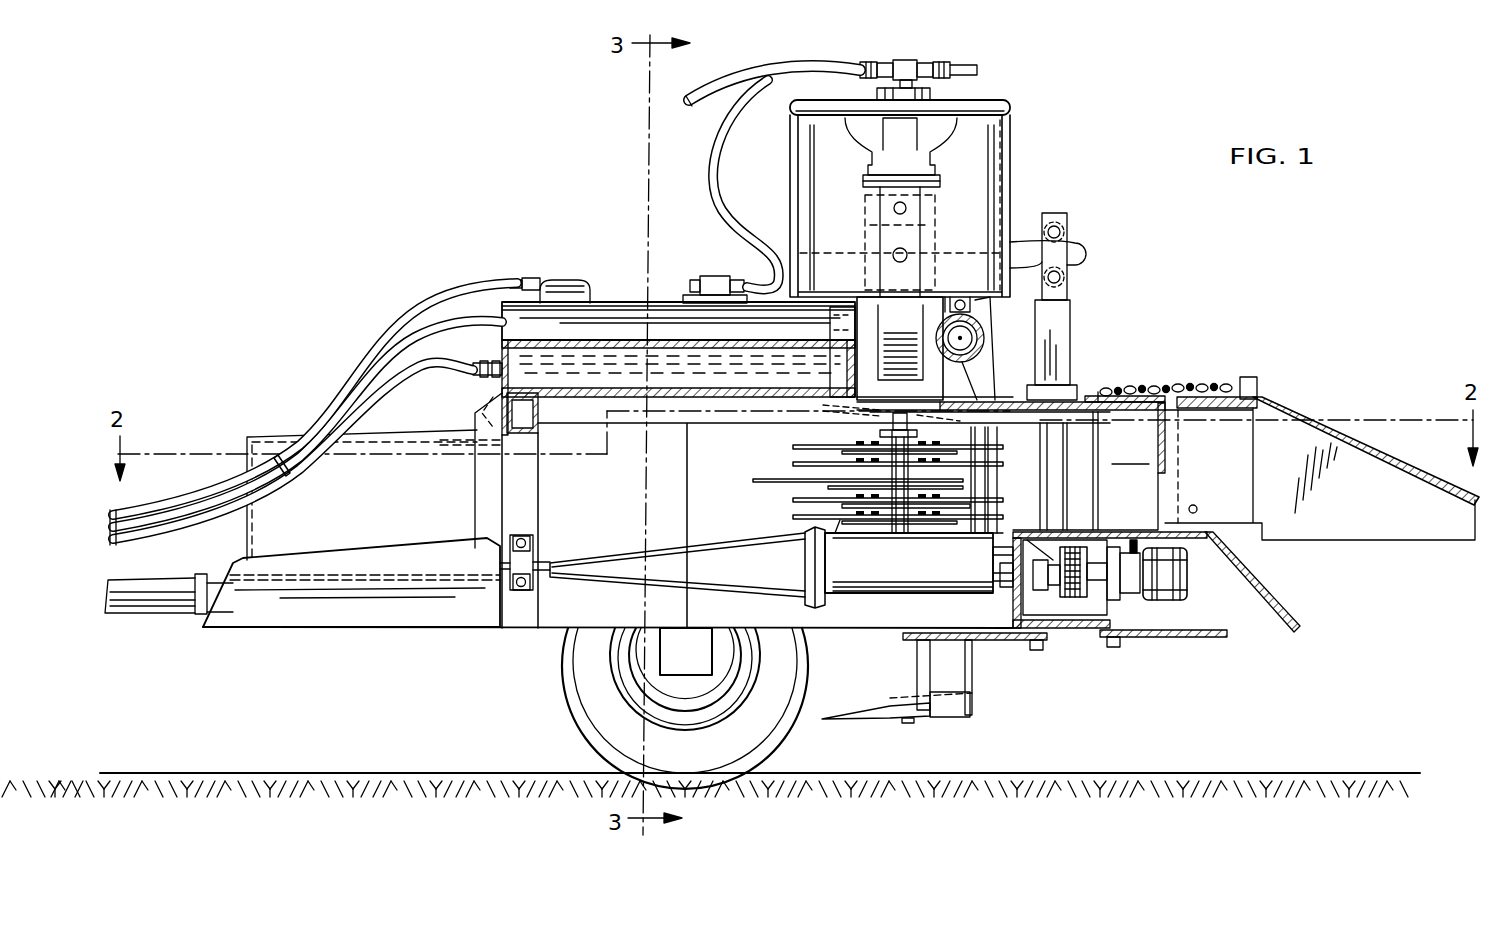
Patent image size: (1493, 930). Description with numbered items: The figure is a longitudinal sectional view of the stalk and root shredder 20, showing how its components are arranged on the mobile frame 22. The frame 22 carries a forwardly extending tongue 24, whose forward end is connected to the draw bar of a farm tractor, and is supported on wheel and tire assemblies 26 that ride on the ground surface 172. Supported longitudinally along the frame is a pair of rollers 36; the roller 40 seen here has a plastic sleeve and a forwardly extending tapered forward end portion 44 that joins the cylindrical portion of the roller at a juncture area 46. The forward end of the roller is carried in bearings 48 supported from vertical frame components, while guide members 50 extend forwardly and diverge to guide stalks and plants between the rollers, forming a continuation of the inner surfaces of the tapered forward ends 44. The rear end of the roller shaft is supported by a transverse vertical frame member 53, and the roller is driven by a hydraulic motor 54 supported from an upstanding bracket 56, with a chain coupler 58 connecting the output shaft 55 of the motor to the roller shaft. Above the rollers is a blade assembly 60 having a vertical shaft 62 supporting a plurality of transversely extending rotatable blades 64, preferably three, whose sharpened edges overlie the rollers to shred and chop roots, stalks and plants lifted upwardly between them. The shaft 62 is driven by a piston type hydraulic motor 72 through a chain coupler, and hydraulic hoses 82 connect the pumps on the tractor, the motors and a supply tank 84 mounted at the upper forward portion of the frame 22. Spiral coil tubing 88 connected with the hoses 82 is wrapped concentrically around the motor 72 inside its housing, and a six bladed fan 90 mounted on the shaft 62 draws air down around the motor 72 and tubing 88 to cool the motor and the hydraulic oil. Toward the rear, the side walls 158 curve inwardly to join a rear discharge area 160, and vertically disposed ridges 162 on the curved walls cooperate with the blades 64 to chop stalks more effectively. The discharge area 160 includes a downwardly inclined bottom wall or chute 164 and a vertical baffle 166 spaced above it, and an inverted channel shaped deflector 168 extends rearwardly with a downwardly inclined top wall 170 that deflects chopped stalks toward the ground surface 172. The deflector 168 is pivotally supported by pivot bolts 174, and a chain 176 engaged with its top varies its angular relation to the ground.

The stalk and root shredder 20 is at (901, 178).
The mobile frame 22 is at (556, 626).
The tongue 24 is at (167, 600).
The wheel and tire assemblies 26 is at (597, 700).
The pair of rollers 36 is at (874, 614).
The roller 40 is at (977, 592).
The tapered forward end portion 44 is at (614, 565).
The juncture area 46 is at (812, 558).
The bearings 48 is at (522, 563).
The guide members 50 is at (373, 617).
The transverse vertical frame member 53 is at (1040, 622).
The hydraulic motor 54 is at (1190, 600).
The output shaft 55 is at (1095, 560).
The upstanding bracket 56 is at (1112, 614).
The chain coupler 58 is at (1080, 550).
The blade assemblies 60 is at (780, 456).
The vertical shaft 62 is at (900, 516).
The rotatable blades 64 is at (840, 522).
The hydraulic motor 72 is at (905, 132).
The hydraulic hoses 82 is at (202, 500).
The supply tank 84 is at (622, 340).
The spiral coil tubing 88 is at (1012, 108).
The fan 90 is at (962, 262).
The side walls 158 is at (1068, 440).
The rear discharge area 160 is at (1089, 466).
The ridges 162 is at (1105, 430).
The bottom wall or chute 164 is at (1237, 560).
The vertical baffle 166 is at (1167, 448).
The deflector 168 is at (1282, 428).
The top wall 170 is at (1345, 440).
The ground surface 172 is at (1250, 773).
The pivot bolts 174 is at (1200, 509).
The chain 176 is at (1215, 385).